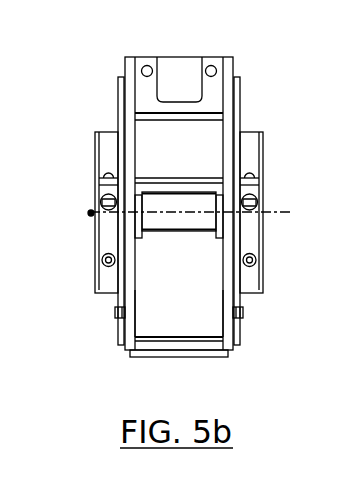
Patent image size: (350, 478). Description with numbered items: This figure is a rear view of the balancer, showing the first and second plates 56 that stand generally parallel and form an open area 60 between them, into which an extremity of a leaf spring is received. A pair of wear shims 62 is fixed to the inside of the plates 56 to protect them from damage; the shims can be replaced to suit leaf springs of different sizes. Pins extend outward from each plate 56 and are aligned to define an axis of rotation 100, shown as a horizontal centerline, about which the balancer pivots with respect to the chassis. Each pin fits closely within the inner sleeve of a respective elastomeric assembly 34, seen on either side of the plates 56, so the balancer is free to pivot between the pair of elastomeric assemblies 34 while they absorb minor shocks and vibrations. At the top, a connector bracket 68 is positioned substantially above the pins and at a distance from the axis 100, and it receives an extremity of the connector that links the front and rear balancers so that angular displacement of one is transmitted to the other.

The elastomeric assembly 34 is at (94, 150).
The plates 56 is at (117, 333).
The open area 60 is at (191, 289).
The wear shims 62 is at (218, 280).
The connector bracket 68 is at (178, 100).
The axis of rotation 100 is at (206, 213).